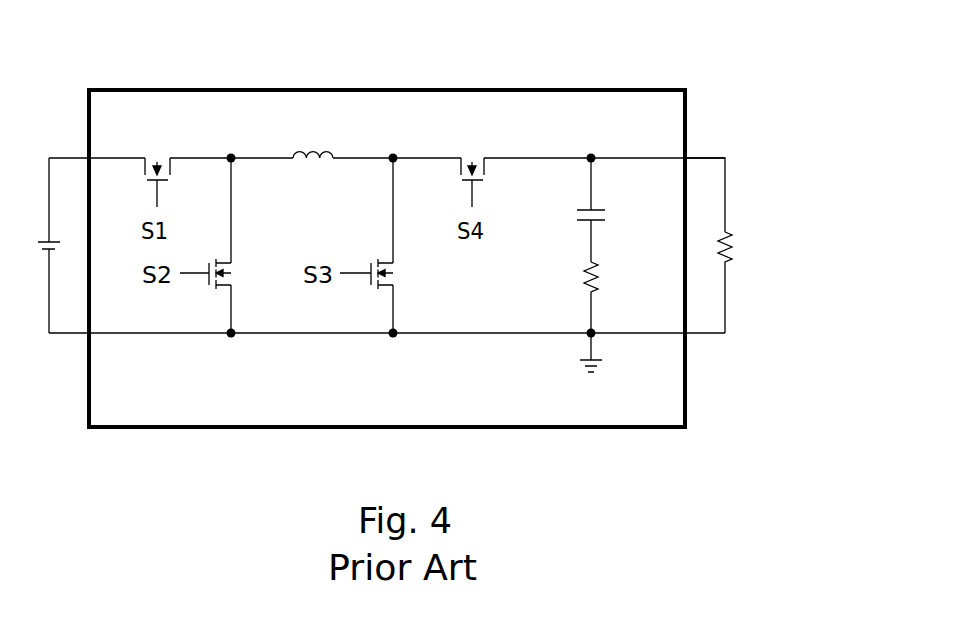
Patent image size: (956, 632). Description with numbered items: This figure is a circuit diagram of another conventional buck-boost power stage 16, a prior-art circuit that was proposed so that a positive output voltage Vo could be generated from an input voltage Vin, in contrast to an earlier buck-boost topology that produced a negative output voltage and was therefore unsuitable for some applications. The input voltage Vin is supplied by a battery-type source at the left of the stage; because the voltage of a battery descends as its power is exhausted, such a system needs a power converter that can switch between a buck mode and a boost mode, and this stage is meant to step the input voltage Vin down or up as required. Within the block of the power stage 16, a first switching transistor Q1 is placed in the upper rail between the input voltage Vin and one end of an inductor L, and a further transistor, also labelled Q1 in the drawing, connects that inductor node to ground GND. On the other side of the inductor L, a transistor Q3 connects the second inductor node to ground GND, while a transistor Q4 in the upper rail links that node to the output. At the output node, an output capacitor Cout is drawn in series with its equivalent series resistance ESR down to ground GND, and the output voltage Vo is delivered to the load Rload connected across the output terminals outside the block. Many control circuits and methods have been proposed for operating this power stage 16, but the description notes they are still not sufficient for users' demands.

The buck-boost power stage 16 is at (388, 90).
The input voltage Vin is at (51, 230).
The switching transistor Q1 is at (204, 231).
The inductor L is at (313, 138).
The switching transistor Q4 is at (472, 168).
The switching transistor Q3 is at (386, 245).
The output capacitor Cout is at (558, 210).
The equivalent series resistance ESR is at (560, 297).
The ground GND is at (589, 369).
The output voltage Vo is at (716, 180).
The load Rload is at (765, 282).